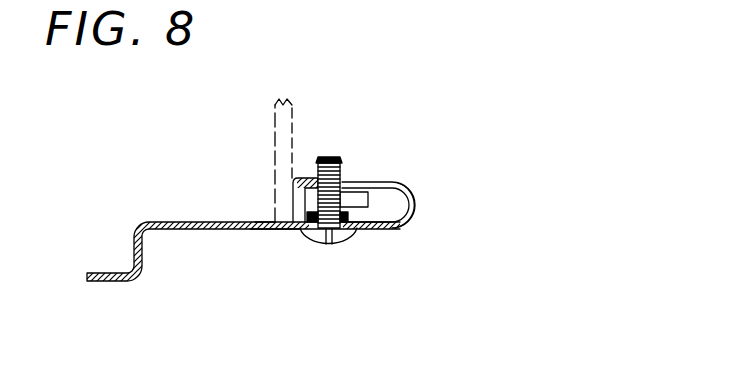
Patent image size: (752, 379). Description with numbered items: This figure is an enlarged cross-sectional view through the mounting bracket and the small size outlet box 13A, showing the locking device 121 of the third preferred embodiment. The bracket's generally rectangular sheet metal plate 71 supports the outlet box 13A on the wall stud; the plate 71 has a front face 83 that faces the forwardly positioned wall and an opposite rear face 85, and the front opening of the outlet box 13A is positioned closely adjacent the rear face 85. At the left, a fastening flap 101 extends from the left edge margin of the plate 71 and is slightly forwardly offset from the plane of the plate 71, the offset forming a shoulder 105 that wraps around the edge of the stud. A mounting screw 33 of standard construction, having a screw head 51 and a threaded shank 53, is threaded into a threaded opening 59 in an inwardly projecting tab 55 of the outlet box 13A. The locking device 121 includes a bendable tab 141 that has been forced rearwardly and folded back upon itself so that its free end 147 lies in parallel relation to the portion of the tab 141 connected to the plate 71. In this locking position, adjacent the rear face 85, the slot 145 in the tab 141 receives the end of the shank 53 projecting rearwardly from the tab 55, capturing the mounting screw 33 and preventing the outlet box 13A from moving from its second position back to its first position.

The small size outlet box 13A is at (297, 100).
The mounting screw 33 is at (303, 240).
The screw head 51 is at (353, 237).
The threaded shank 53 is at (342, 162).
The inwardly projecting tab 55 is at (368, 203).
The threaded opening 59 is at (328, 247).
The sheet metal plate 71 is at (185, 221).
The front face 83 is at (268, 230).
The rear face 85 is at (262, 220).
The fastening flap 101 is at (113, 283).
The shoulder 105 is at (134, 243).
The locking device 121 is at (428, 136).
The bendable tab 141 is at (405, 228).
The slot 145 is at (375, 182).
The free end 147 is at (302, 178).